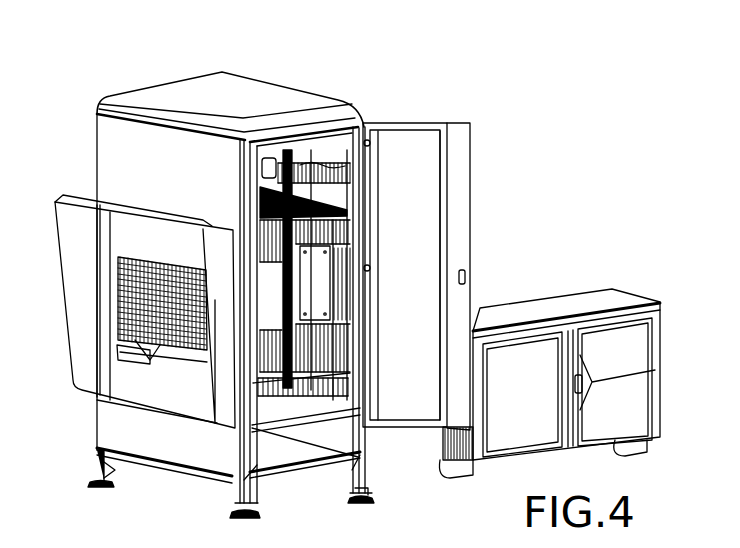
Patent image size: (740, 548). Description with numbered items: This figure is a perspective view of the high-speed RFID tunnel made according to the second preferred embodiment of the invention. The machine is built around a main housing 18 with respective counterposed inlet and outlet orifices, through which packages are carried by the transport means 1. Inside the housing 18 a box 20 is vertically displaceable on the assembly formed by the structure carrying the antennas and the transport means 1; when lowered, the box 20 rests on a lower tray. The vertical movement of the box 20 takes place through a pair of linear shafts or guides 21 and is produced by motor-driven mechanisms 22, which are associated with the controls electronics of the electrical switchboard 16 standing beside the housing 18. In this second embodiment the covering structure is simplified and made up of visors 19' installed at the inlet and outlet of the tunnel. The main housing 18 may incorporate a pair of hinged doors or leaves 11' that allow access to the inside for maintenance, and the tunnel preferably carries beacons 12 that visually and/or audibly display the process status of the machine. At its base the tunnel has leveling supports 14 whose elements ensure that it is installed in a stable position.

The transport means 1 is at (197, 328).
The hinged doors or leaves 11' is at (293, 230).
The beacons 12 is at (327, 100).
The leveling supports 14 is at (375, 497).
The electrical switchboard 16 is at (617, 337).
The housing 18 is at (143, 137).
The visors 19' is at (130, 285).
The box 20 is at (155, 322).
The linear shafts or guides 21 is at (300, 267).
The motor-driven mechanisms 22 is at (337, 167).